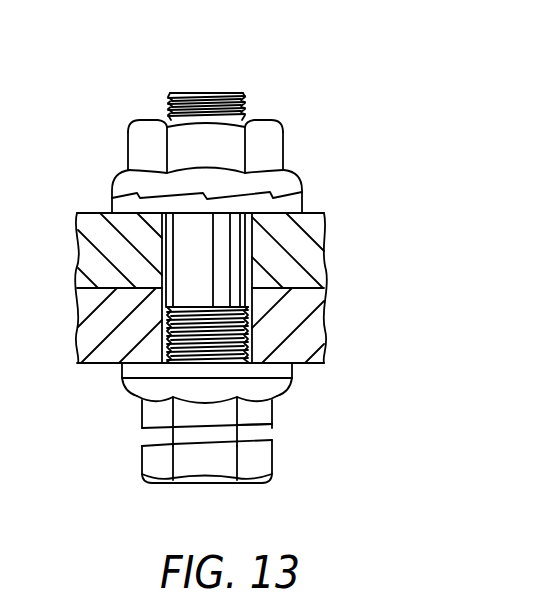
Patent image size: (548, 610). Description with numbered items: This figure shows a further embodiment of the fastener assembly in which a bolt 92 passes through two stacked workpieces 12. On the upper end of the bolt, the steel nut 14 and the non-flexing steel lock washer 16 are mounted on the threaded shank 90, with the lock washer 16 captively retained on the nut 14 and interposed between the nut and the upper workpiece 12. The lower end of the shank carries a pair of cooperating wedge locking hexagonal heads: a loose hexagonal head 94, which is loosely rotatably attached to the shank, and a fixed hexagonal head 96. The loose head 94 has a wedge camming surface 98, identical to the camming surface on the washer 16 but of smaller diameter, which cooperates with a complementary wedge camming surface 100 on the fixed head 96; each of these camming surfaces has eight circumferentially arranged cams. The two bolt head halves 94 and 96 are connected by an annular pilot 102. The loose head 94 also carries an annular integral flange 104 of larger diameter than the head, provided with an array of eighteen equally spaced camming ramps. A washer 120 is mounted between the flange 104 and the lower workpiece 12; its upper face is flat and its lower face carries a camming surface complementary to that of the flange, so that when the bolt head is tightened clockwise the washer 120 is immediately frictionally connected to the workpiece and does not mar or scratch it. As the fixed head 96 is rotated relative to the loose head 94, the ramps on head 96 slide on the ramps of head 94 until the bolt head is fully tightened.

The threaded shank 90 is at (169, 100).
The nut 14 is at (283, 127).
The lock washer 16 is at (303, 205).
The workpiece 12 is at (322, 252).
The bolt 92 is at (162, 287).
The washer 120 is at (293, 377).
The annular integral flange 104 is at (123, 390).
The loose hexagonal head 94 is at (142, 408).
The annular pilot 102 is at (167, 433).
The wedge camming surface 100 is at (267, 428).
The wedge camming surface 98 is at (253, 440).
The fixed hexagonal head 96 is at (140, 460).